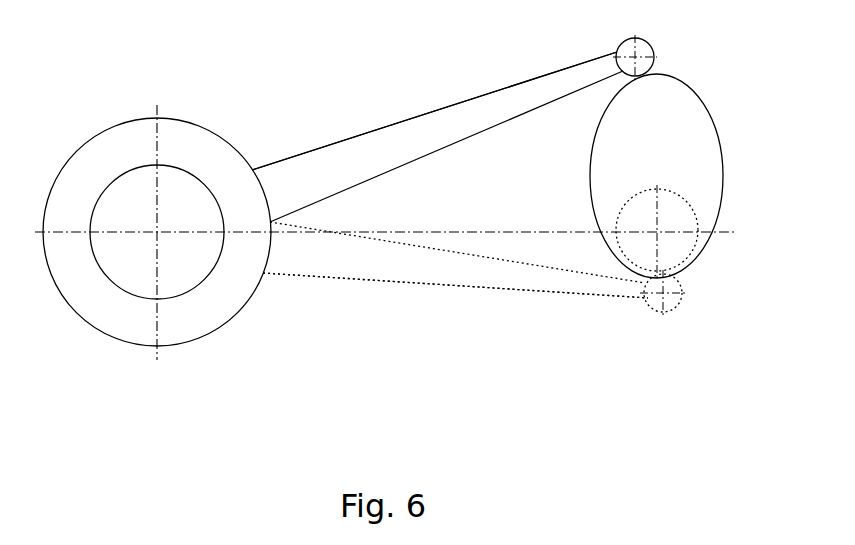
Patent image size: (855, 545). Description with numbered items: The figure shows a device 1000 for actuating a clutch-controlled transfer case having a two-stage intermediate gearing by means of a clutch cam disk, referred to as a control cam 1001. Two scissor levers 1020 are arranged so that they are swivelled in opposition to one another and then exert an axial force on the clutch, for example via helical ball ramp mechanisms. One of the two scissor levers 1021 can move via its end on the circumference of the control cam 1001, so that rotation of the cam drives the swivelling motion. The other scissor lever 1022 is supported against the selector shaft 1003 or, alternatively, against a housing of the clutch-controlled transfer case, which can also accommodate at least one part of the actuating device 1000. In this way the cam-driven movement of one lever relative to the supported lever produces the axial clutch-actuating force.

The device for actuating a clutch-controlled transfer case 1000 is at (590, 386).
The control cam 1001 is at (667, 120).
The selector shaft 1003 is at (667, 247).
The scissor levers 1020 is at (378, 143).
The scissor lever 1021 is at (477, 108).
The scissor lever 1022 is at (475, 273).